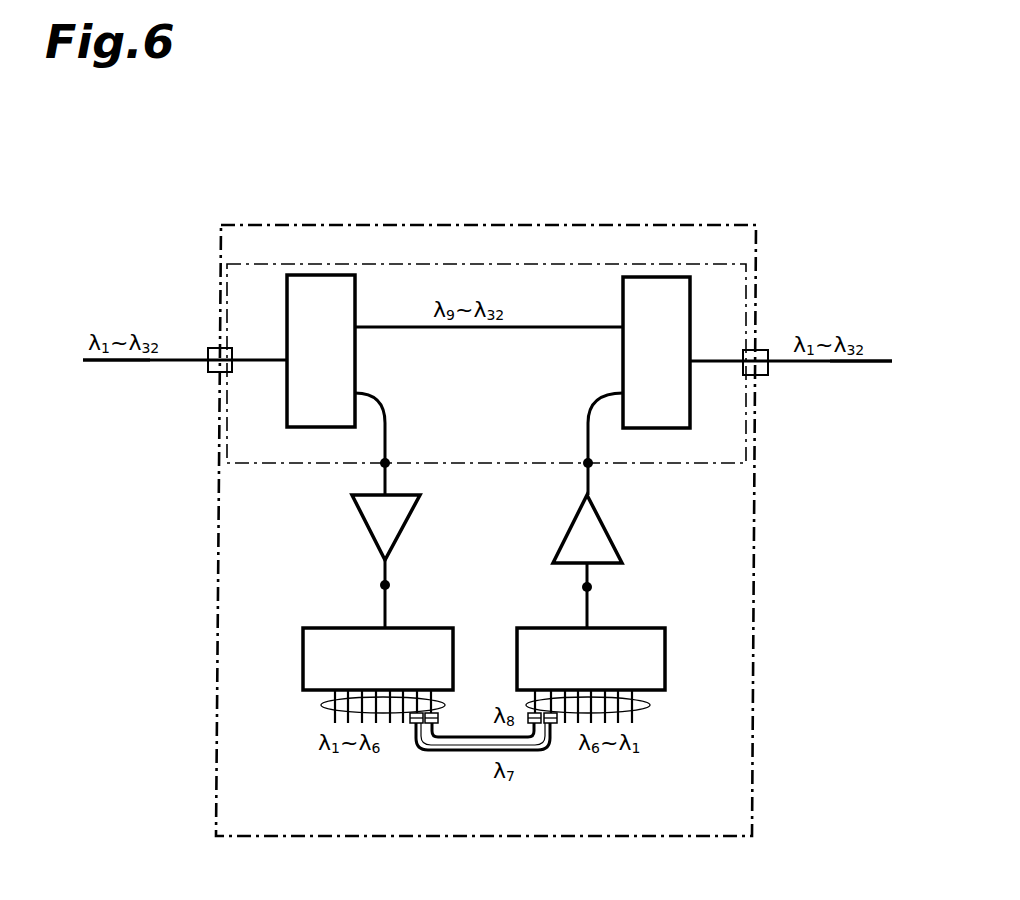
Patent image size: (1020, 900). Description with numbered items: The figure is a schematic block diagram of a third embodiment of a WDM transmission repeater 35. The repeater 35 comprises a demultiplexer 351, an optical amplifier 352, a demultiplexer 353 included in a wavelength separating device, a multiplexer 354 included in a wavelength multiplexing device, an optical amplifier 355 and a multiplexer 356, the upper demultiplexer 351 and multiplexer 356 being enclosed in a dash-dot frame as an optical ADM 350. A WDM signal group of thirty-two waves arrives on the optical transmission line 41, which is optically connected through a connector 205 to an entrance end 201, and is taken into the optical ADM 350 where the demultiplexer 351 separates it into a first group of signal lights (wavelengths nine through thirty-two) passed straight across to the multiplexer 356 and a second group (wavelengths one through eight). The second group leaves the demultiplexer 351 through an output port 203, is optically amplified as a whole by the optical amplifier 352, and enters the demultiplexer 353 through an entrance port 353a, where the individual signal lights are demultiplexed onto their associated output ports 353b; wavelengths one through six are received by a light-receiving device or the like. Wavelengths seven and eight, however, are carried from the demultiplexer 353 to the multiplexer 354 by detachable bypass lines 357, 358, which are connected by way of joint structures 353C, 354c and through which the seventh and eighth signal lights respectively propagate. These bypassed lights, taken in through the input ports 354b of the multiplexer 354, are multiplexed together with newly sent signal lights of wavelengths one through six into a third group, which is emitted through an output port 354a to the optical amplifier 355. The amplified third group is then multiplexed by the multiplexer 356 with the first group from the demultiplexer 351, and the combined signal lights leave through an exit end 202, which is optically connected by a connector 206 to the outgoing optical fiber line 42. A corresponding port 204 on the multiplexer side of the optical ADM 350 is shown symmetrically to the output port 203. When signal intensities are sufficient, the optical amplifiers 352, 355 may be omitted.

The WDM transmission repeater 35 is at (518, 225).
The optical ADM 350 is at (382, 264).
The demultiplexer 351 is at (330, 275).
The multiplexer 356 is at (661, 277).
The optical amplifier 352 is at (367, 525).
The optical amplifier 355 is at (610, 530).
The demultiplexer 353 is at (303, 658).
The multiplexer 354 is at (665, 658).
The entrance port 353a is at (383, 605).
The output port 354a is at (589, 607).
The output ports 353b is at (322, 705).
The input ports 354b is at (645, 705).
The joint structure 353C is at (430, 752).
The joint structure 354c is at (555, 752).
The bypass line 357 is at (470, 752).
The bypass line 358 is at (478, 735).
The entrance end 201 is at (257, 360).
The exit end 202 is at (718, 361).
The output port 203 is at (373, 432).
The branch fiber 204 is at (590, 433).
The connector 205 is at (210, 347).
The connector 206 is at (762, 350).
The optical transmission line 41 is at (150, 363).
The optical fiber line 42 is at (830, 367).